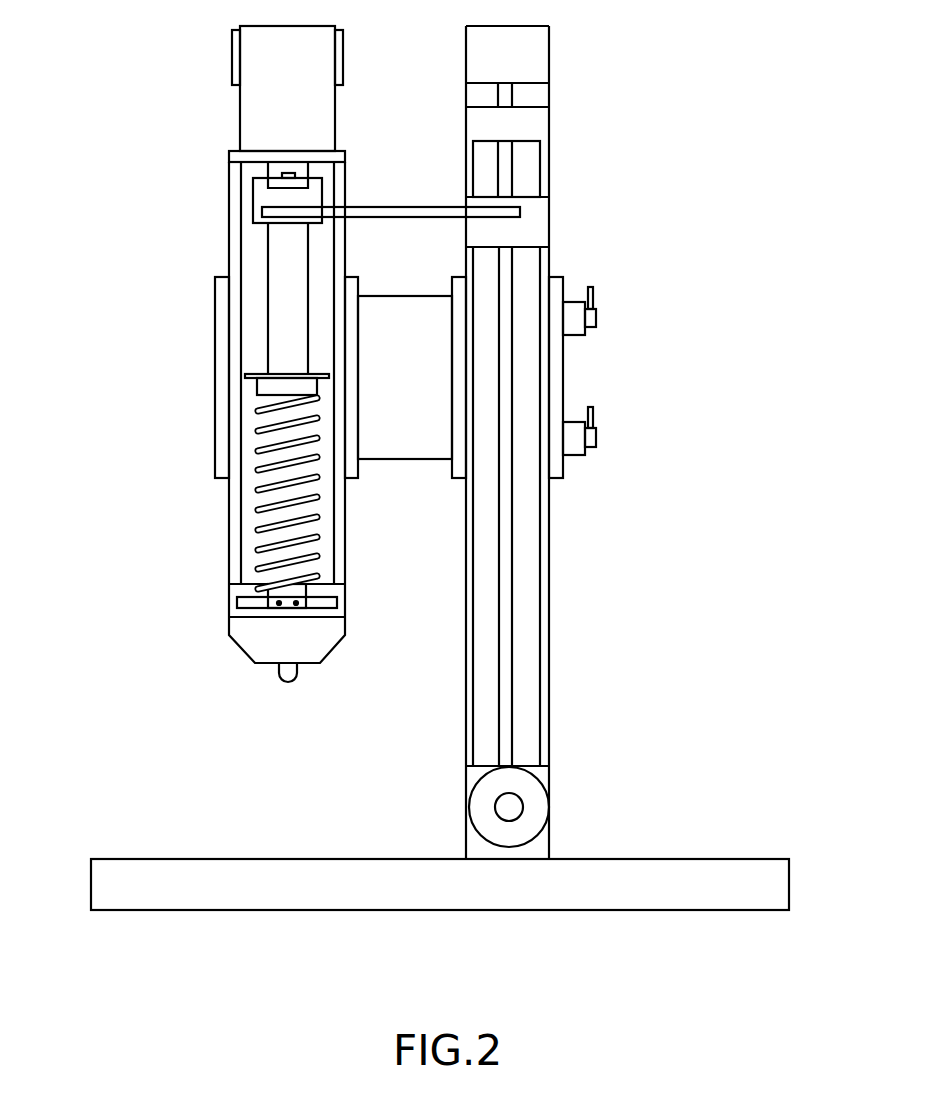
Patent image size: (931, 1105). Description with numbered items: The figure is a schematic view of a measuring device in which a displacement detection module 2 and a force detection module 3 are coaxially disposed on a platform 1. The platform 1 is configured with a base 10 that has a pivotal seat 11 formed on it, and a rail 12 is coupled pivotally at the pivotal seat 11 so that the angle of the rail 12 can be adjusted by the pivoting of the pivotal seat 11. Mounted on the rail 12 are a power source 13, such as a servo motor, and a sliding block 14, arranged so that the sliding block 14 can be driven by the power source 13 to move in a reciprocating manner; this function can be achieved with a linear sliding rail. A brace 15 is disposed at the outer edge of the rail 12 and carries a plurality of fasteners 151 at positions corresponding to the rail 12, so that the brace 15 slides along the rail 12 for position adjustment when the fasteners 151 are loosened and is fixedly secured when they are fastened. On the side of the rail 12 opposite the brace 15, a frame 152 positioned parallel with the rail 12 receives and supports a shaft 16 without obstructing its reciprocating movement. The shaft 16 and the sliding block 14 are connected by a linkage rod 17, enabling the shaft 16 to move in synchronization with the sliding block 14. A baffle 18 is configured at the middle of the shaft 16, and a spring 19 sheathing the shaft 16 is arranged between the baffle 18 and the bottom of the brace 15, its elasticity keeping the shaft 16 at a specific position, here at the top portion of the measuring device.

The platform 1 is at (650, 316).
The displacement detection module 2 is at (200, 114).
The force detection module 3 is at (248, 684).
The base 10 is at (713, 883).
The pivotal seat 11 is at (537, 807).
The rail 12 is at (540, 570).
The power source 13 is at (537, 61).
The sliding block 14 is at (535, 230).
The brace 15 is at (424, 450).
The fasteners 151 is at (572, 330).
The frame 152 is at (339, 537).
The shaft 16 is at (275, 272).
The linkage rod 17 is at (407, 207).
The baffle 18 is at (263, 381).
The spring 19 is at (262, 490).